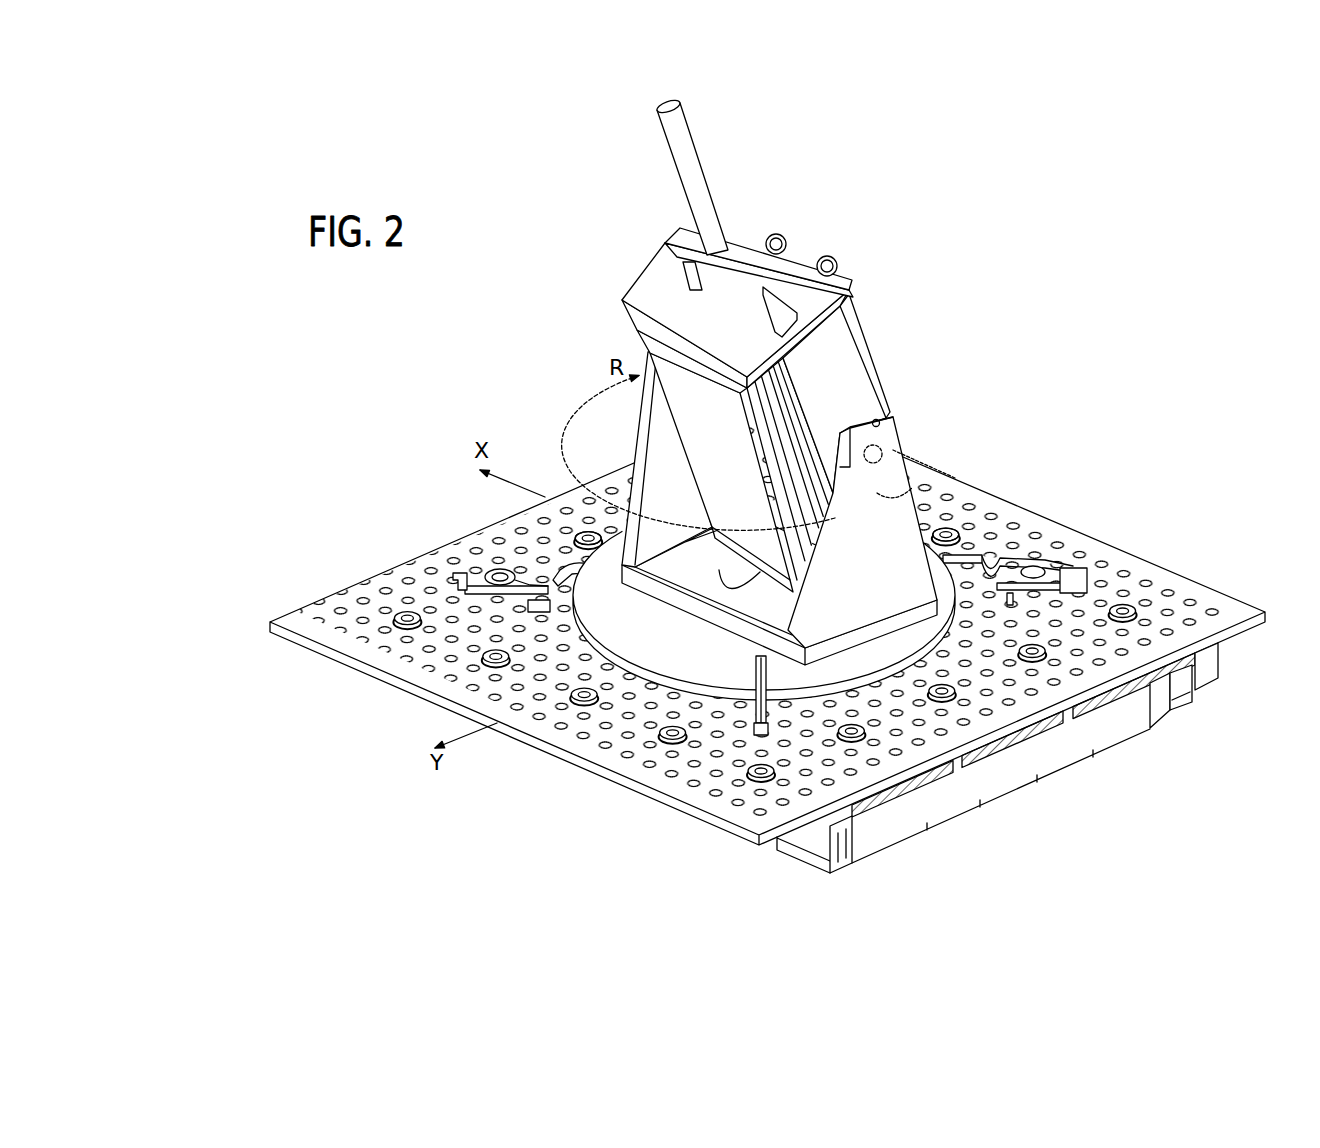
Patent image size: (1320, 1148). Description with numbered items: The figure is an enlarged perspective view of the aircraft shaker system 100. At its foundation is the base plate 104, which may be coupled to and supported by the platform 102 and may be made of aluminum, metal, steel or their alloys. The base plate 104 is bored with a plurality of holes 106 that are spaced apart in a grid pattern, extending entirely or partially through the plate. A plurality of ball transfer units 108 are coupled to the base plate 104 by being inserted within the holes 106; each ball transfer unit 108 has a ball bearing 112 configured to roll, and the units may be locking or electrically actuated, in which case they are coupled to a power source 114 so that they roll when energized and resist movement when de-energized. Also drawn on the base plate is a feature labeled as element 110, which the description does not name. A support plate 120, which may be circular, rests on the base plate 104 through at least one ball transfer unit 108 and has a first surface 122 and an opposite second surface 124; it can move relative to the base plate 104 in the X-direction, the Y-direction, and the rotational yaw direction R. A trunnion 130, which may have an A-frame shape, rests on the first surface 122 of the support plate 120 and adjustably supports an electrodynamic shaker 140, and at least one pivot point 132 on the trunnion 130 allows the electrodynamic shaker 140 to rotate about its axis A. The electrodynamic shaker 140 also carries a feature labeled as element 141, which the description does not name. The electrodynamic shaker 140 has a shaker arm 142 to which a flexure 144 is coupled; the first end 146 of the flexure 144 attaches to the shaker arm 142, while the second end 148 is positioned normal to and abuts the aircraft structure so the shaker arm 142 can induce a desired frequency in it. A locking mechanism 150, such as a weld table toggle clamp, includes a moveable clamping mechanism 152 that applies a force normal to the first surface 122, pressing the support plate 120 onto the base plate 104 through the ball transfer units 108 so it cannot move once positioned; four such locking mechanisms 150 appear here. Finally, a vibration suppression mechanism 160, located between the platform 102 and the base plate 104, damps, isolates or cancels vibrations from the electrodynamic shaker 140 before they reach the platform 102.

The aircraft shaker system 100 is at (1132, 227).
The platform 102 is at (1198, 712).
The base plate 104 is at (650, 777).
The holes 106 is at (583, 740).
The ball transfer units 108 is at (1133, 603).
The boss top face 110 is at (1163, 612).
The ball bearing 112 is at (1126, 571).
The power source 114 is at (1220, 662).
The support plate 120 is at (703, 690).
The first surface 122 is at (627, 630).
The second surface 124 is at (590, 642).
The trunnion 130 is at (933, 462).
The pivot point 132 is at (872, 425).
The electrodynamic shaker 140 is at (791, 417).
The rails 141 is at (842, 338).
The shaker arm 142 is at (777, 293).
The flexure 144 is at (688, 148).
The first end 146 is at (731, 222).
The second end 148 is at (686, 93).
The locking mechanism 150 is at (527, 567).
The clamping mechanism 152 is at (590, 535).
The vibration suppression mechanism 160 is at (1148, 700).